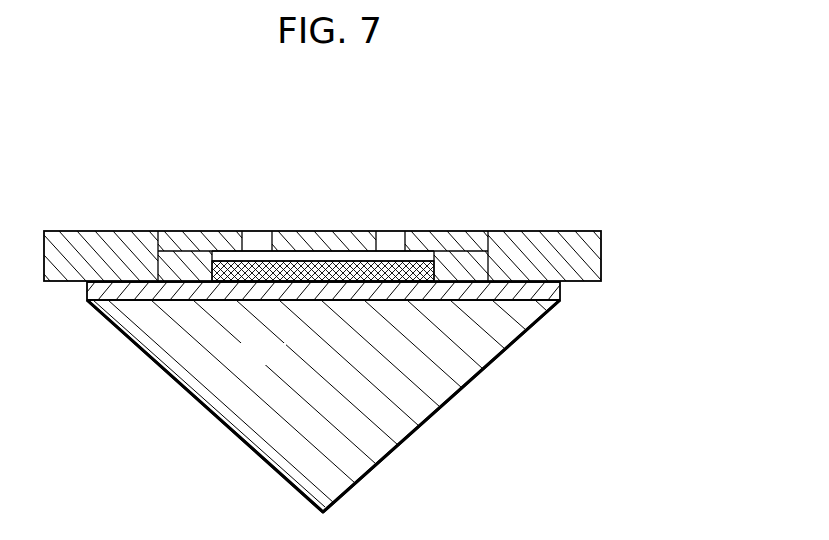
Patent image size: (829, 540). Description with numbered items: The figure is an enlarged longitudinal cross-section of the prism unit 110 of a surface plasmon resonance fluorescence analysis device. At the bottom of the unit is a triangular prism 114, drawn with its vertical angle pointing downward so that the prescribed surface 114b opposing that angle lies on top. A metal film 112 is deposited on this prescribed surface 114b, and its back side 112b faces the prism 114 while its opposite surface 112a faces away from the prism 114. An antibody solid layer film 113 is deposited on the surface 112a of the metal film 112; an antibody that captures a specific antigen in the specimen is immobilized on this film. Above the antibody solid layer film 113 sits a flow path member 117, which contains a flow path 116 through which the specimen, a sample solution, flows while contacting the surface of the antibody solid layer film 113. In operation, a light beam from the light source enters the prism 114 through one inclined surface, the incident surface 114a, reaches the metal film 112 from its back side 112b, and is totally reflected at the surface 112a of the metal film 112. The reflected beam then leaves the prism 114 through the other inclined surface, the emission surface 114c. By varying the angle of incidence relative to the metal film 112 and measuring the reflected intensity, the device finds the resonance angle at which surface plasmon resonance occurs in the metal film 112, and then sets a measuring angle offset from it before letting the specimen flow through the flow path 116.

The prism unit 110 is at (517, 153).
The metal film 112 is at (562, 286).
The surface of the metal film 112a is at (112, 282).
The back side of the metal film 112b is at (113, 302).
The antibody solid layer film 113 is at (310, 261).
The prism 114 is at (455, 401).
The incident surface 114a is at (205, 412).
The prescribed surface 114b is at (255, 300).
The emission surface 114c is at (378, 464).
The flow path 116 is at (417, 258).
The flow path member 117 is at (610, 256).